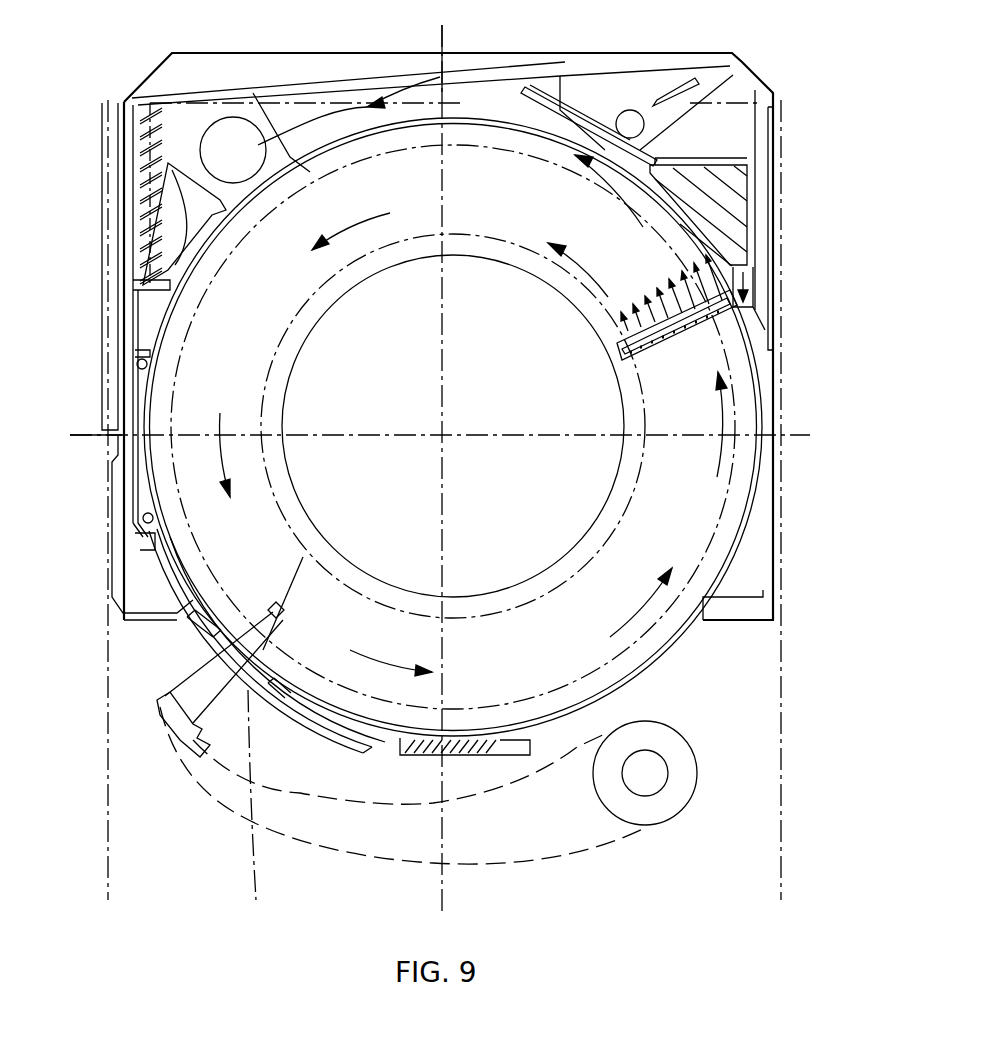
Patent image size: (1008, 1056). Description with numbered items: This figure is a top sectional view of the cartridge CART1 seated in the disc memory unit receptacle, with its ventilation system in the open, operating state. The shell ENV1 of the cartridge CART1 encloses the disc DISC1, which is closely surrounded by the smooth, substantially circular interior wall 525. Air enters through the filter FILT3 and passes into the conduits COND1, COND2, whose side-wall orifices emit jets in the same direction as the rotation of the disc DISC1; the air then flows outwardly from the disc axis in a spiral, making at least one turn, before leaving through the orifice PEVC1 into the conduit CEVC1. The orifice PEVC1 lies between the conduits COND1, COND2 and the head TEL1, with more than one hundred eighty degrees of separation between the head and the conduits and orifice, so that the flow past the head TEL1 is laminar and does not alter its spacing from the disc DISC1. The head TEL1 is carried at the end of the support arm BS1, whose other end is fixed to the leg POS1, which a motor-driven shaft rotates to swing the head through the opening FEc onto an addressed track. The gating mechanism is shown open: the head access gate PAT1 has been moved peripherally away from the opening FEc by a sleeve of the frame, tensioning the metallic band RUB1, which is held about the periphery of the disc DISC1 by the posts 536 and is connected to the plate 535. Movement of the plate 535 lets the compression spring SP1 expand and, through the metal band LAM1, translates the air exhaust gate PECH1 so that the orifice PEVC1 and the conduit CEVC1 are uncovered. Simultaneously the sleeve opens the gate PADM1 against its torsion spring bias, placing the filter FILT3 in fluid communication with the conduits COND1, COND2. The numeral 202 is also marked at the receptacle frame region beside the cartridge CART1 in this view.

The conduit CEVC1 is at (232, 140).
The shell ENV1 is at (307, 90).
The orifice PEVC1 is at (430, 46).
The cartridge CART1 is at (620, 53).
The gate PADM1 is at (705, 85).
The compression spring SP1 is at (165, 153).
The disc DISC1 is at (478, 115).
The filter FILT3 is at (757, 217).
The air exhaust gate PECH1 is at (214, 208).
The metal band LAM1 is at (177, 255).
The plate 535 is at (140, 288).
The metallic band RUB1 is at (141, 347).
The posts 536 is at (148, 366).
The frame wall 202 is at (110, 443).
The interior wall 525 is at (760, 487).
The conduit COND1 is at (738, 296).
The conduit COND2 is at (738, 315).
The support arm BS1 is at (268, 612).
The head TEL1 is at (258, 625).
The opening FEc is at (200, 650).
The head access gate PAT1 is at (297, 717).
The leg POS1 is at (298, 843).